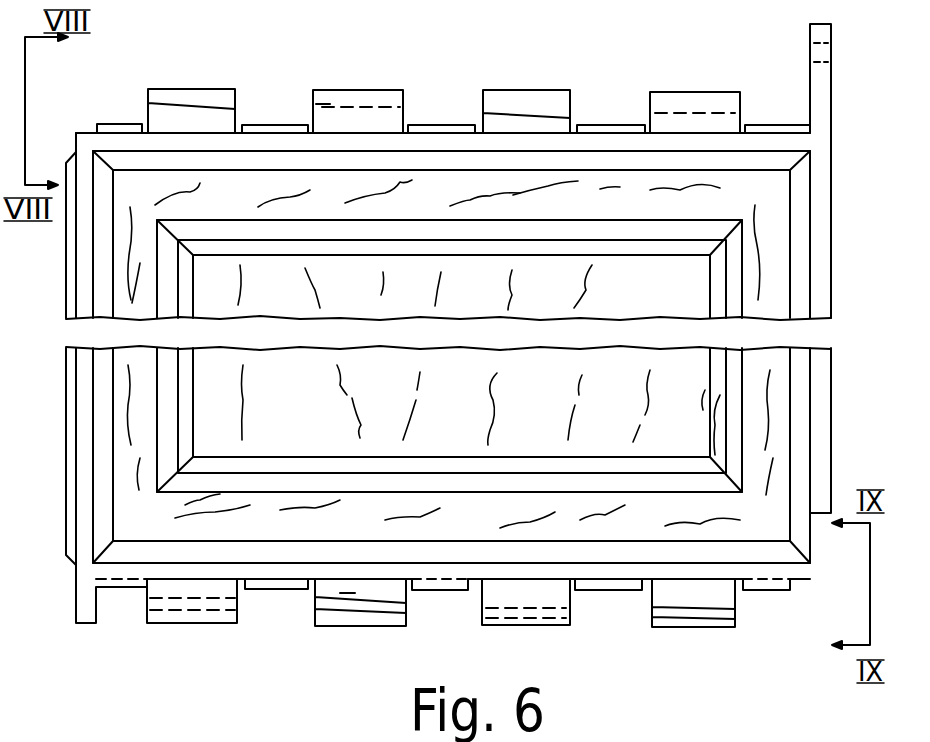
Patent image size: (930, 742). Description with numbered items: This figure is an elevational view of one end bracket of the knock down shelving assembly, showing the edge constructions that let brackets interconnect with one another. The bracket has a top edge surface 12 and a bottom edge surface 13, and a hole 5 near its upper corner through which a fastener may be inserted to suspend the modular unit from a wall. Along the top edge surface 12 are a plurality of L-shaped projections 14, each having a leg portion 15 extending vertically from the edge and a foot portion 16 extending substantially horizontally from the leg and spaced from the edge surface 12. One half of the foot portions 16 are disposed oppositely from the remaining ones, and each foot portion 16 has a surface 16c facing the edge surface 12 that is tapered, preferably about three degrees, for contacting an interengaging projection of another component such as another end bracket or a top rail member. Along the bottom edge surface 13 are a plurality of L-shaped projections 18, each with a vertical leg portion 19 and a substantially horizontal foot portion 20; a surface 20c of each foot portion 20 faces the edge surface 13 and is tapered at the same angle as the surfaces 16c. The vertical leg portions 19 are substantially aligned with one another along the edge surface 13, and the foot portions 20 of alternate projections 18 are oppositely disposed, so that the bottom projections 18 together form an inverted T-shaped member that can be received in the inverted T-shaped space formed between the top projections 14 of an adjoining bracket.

The holes 5 is at (832, 49).
The top edge surface 12 is at (212, 132).
The bottom edge surface 13 is at (559, 584).
The L-shaped projections 14 is at (371, 90).
The leg portion 15 is at (680, 105).
The foot portion 16 is at (525, 105).
The tapered surface 16c is at (343, 104).
The L-shaped projections 18 is at (375, 627).
The vertical leg portion 19 is at (217, 624).
The foot portion 20 is at (683, 613).
The tapered surface 20c is at (350, 596).